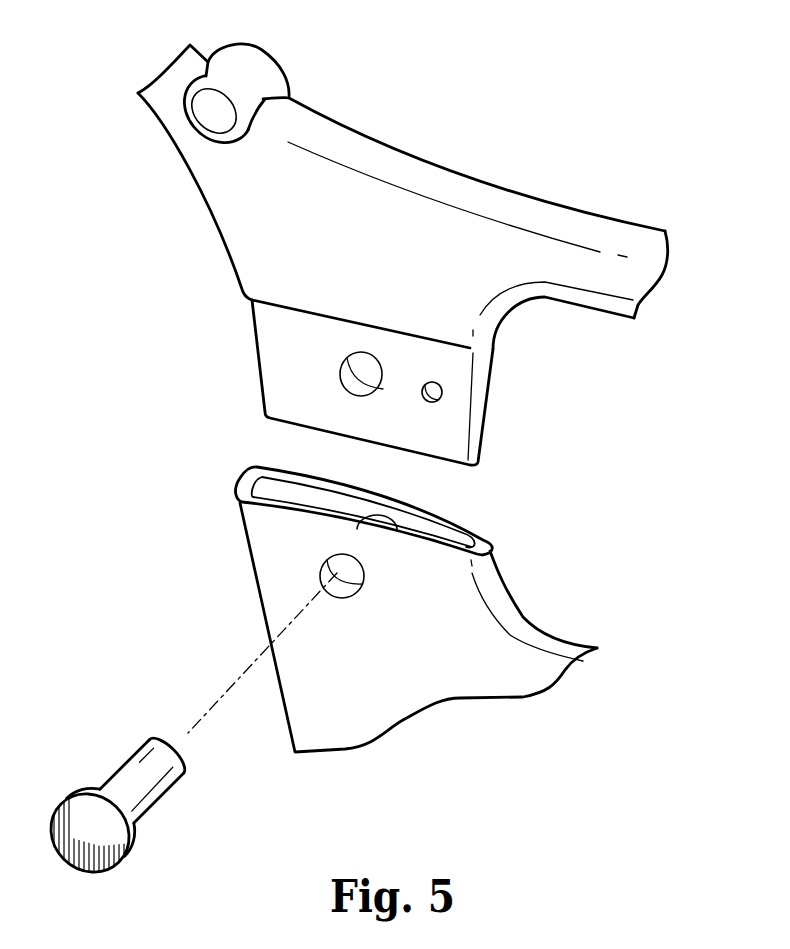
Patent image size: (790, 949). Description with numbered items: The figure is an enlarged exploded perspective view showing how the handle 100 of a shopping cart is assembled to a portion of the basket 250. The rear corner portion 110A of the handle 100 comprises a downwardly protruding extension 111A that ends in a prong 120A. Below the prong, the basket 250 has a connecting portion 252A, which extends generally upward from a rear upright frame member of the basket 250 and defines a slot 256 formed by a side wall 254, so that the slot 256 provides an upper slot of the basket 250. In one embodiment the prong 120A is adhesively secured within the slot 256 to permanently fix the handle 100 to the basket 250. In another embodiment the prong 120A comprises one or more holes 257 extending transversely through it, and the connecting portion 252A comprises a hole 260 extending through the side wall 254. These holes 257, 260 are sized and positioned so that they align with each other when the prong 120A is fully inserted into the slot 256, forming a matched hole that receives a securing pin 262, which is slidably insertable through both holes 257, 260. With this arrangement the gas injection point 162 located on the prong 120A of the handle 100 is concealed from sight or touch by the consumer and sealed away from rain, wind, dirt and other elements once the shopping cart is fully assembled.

The handle 100 is at (428, 254).
The rear corner portion 110A is at (457, 193).
The downwardly protruding extension 111A is at (250, 255).
The prong 120A is at (346, 382).
The holes 257 is at (340, 376).
The gas injection point 162 is at (442, 396).
The basket 250 is at (407, 597).
The connecting portion 252A is at (368, 597).
The side wall 254 is at (430, 515).
The slot 256 is at (272, 488).
The hole 260 is at (358, 596).
The securing pin 262 is at (122, 768).